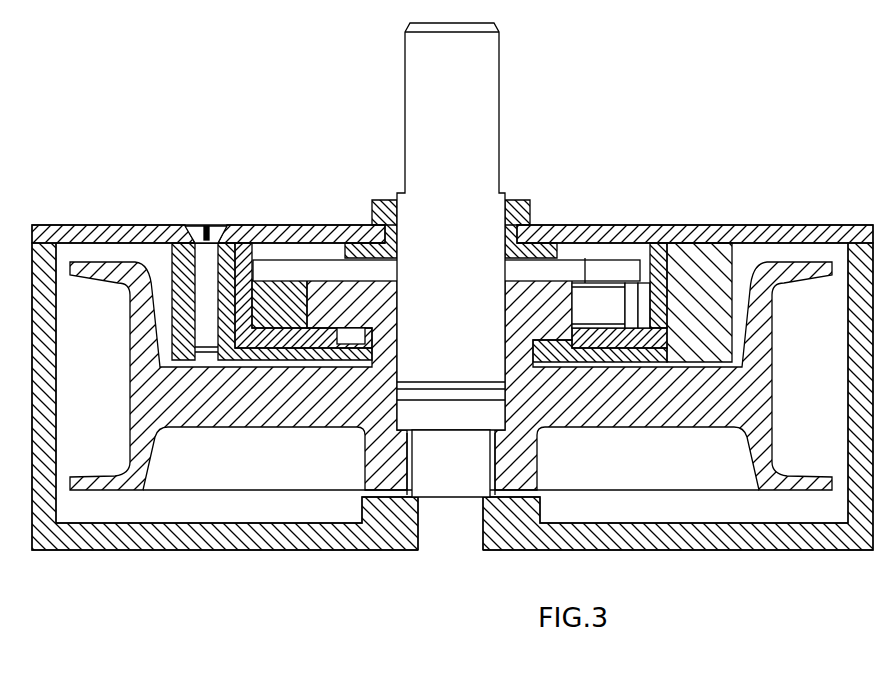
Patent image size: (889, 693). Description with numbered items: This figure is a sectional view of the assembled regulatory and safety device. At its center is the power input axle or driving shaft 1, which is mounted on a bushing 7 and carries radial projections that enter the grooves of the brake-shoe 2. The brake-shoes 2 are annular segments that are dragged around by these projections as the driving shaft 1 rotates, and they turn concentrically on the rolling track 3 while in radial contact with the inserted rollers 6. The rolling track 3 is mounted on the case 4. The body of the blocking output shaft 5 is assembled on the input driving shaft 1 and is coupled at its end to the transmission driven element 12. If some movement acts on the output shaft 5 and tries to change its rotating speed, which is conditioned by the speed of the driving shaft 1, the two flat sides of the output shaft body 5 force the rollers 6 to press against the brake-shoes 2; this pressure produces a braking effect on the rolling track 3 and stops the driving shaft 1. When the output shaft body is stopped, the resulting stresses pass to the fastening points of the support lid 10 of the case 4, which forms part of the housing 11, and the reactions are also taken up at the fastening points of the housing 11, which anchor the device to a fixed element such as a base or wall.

The power axle 1 is at (413, 136).
The brake-shoe 2 is at (290, 293).
The rolling track 3 is at (657, 262).
The case 4 is at (695, 263).
The blocking output shaft 5 is at (345, 298).
The rollers 6 is at (600, 298).
The bushings 7 is at (388, 198).
The support lid 10 is at (739, 240).
The housing 11 is at (232, 545).
The transmission driven element 12 is at (676, 415).